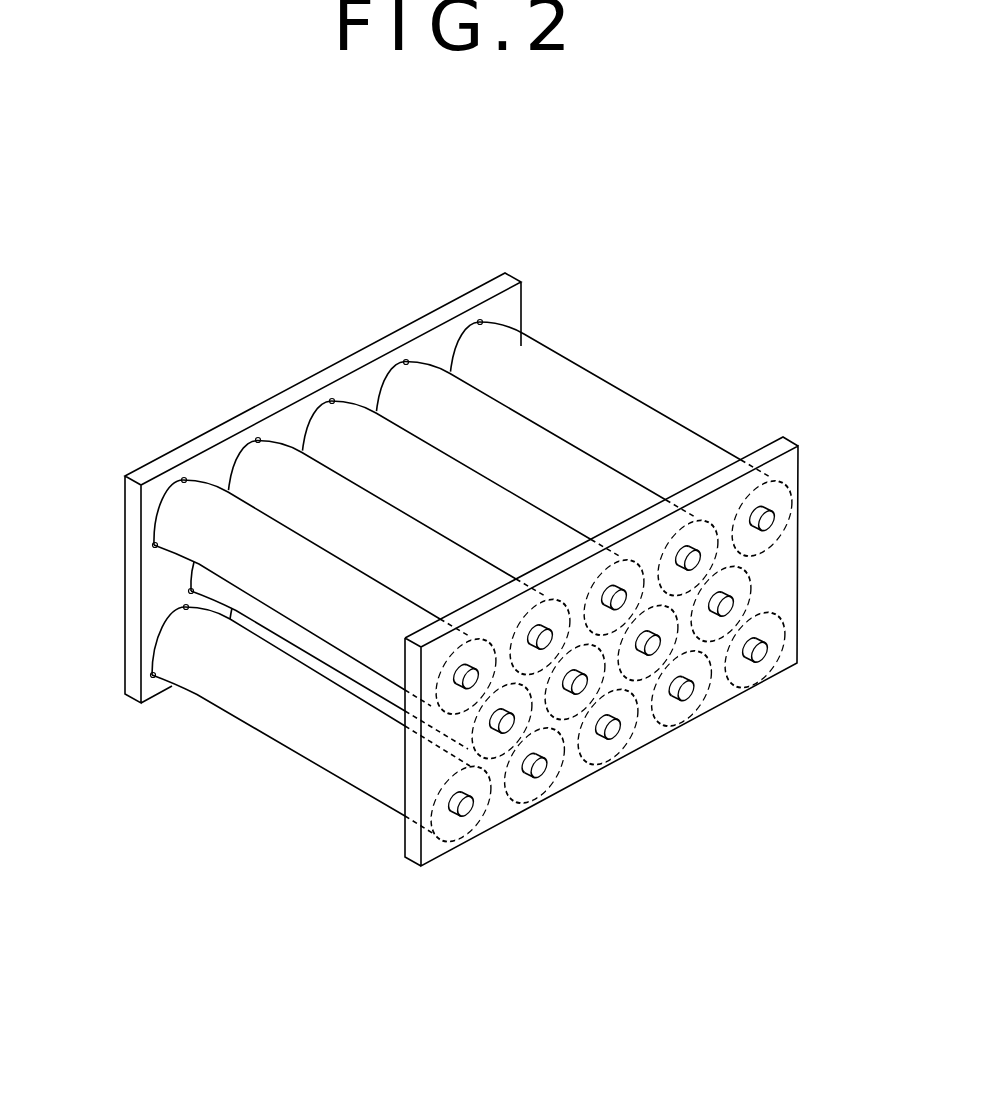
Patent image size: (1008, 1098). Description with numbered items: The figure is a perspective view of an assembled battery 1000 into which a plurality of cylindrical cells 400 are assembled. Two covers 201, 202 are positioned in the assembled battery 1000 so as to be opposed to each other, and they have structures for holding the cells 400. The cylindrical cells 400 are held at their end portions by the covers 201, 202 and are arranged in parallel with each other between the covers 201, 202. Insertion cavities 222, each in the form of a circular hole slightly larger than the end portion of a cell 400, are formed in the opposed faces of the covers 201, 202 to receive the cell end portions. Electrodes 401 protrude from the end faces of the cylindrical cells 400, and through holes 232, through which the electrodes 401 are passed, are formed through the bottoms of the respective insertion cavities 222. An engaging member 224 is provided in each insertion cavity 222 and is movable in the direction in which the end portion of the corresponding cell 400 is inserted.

The assembled battery 1000 is at (651, 276).
The cover 201 is at (322, 380).
The cover 202 is at (772, 452).
The insertion cavity 222 is at (470, 346).
The engaging member 224 is at (483, 322).
The through hole 232 is at (771, 516).
The cylindrical cell 400 is at (650, 417).
The electrode 401 is at (772, 527).